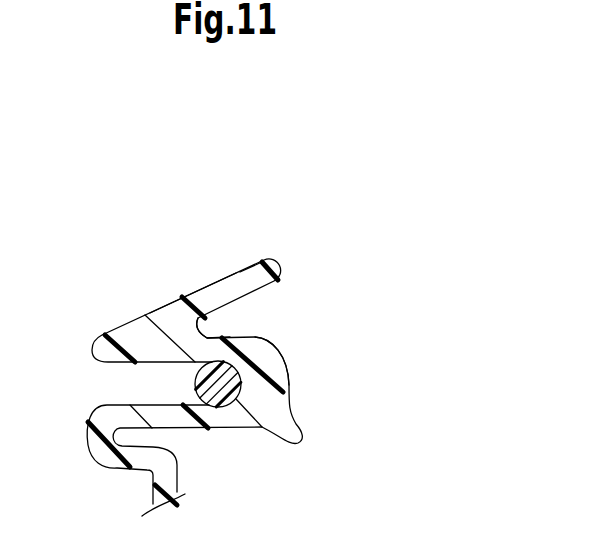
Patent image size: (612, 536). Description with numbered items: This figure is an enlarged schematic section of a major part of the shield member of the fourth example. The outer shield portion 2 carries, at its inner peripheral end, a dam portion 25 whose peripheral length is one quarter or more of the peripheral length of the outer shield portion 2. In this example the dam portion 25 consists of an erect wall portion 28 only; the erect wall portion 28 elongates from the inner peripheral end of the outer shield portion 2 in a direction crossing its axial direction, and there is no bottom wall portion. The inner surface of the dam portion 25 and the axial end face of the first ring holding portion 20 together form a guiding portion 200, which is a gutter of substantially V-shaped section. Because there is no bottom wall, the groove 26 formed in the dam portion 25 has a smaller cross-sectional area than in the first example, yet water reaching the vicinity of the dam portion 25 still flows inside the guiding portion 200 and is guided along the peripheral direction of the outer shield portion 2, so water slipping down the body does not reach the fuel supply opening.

The outer shield portion 2 is at (313, 380).
The first ring holding portion 20 is at (288, 344).
The guiding portion 200 is at (247, 330).
The dam portion 25 is at (243, 310).
The groove 26 is at (230, 304).
The erect wall portion 28 is at (145, 315).